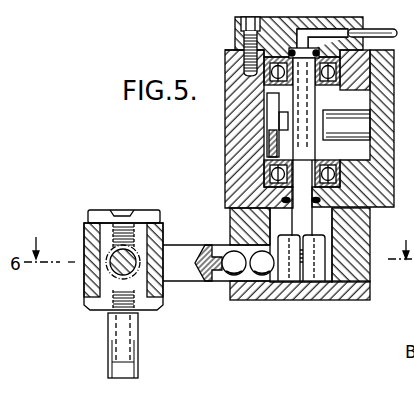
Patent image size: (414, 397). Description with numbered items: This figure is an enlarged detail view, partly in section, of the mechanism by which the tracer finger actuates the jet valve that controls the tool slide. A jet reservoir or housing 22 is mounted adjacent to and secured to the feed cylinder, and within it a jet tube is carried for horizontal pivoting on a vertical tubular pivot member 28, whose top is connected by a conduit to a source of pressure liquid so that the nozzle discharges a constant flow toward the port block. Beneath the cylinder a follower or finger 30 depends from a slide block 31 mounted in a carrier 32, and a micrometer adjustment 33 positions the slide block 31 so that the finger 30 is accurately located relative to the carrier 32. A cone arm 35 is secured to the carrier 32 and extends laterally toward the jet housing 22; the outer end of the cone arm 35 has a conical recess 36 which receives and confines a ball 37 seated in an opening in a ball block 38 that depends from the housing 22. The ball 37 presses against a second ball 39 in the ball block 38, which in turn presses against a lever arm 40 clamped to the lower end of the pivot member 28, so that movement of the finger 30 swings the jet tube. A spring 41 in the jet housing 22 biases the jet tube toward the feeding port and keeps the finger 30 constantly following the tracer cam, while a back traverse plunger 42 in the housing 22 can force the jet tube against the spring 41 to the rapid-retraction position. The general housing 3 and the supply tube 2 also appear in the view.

The supply tube 2 is at (406, 19).
The housing 3 is at (363, 128).
The jet reservoir or housing 22 is at (227, 125).
The vertical tubular pivot member 28 is at (312, 220).
The follower or finger 30 is at (139, 354).
The slide block 31 is at (80, 321).
The carrier 32 is at (85, 274).
The micrometer adjustment 33 is at (113, 254).
The cone arm 35 is at (189, 244).
The conical recess 36 is at (206, 246).
The ball 37 is at (228, 282).
The ball block 38 is at (279, 301).
The second ball 39 is at (262, 270).
The lever arm 40 is at (320, 264).
The spring 41 is at (323, 123).
The back traverse plunger 42 is at (268, 128).